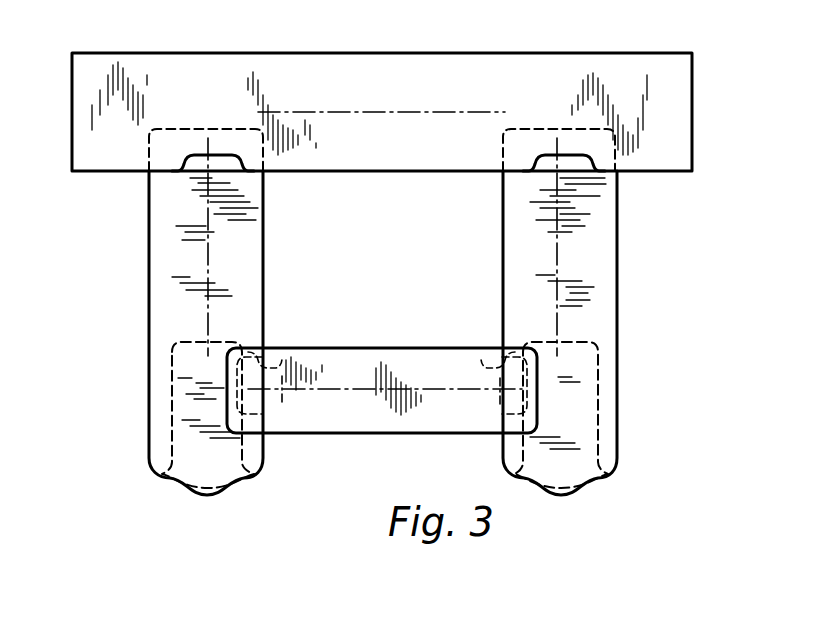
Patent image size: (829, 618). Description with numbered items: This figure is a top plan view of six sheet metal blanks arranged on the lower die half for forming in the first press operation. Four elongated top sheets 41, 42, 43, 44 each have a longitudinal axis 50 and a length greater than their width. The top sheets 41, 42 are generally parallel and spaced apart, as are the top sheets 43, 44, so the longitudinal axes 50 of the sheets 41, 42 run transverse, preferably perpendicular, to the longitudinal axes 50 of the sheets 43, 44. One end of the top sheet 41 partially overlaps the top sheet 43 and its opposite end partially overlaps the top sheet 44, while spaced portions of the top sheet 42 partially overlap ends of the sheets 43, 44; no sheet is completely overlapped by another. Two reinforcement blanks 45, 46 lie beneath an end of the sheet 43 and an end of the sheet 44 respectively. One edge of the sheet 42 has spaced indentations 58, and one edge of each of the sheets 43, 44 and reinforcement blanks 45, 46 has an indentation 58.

The top sheet 41 is at (398, 437).
The top sheet 42 is at (434, 52).
The top sheet 43 is at (146, 250).
The top sheet 44 is at (626, 245).
The reinforcement blank 45 is at (170, 428).
The reinforcement blank 46 is at (601, 405).
The longitudinal axis 50 is at (456, 112).
The indentation 58 is at (193, 178).